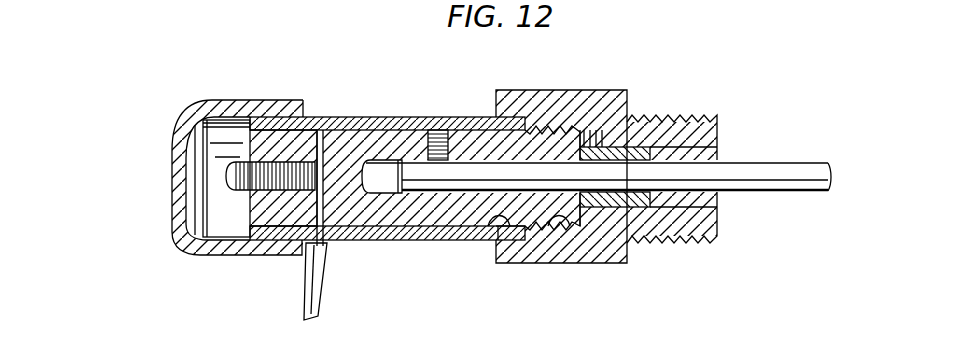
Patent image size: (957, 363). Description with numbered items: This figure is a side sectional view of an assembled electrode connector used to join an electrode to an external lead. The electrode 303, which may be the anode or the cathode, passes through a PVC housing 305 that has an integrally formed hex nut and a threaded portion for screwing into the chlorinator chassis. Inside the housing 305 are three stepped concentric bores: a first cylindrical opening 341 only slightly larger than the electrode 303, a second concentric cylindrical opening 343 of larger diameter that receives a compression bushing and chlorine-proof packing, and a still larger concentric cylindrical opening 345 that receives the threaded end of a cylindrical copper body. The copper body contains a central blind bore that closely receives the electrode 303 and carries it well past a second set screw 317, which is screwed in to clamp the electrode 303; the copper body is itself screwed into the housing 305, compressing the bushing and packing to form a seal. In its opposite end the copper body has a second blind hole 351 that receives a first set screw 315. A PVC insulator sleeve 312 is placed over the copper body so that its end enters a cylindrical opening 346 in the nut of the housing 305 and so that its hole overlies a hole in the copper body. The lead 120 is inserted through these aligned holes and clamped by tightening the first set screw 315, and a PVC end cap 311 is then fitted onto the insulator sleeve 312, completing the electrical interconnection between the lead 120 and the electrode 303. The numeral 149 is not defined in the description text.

The end cap 311 is at (200, 100).
The insulator sleeve 312 is at (375, 116).
The first set screw 315 is at (233, 178).
The second set screw 317 is at (443, 130).
The housing 305 is at (583, 90).
The electrode 303 is at (762, 170).
The second blind hole 351 is at (284, 195).
The body insert 149 is at (383, 183).
The lead 120 is at (327, 268).
The cylindrical opening 346 is at (500, 220).
The concentric cylindrical opening 345 is at (548, 240).
The second concentric cylindrical opening 343 is at (610, 240).
The first cylindrical opening 341 is at (690, 240).